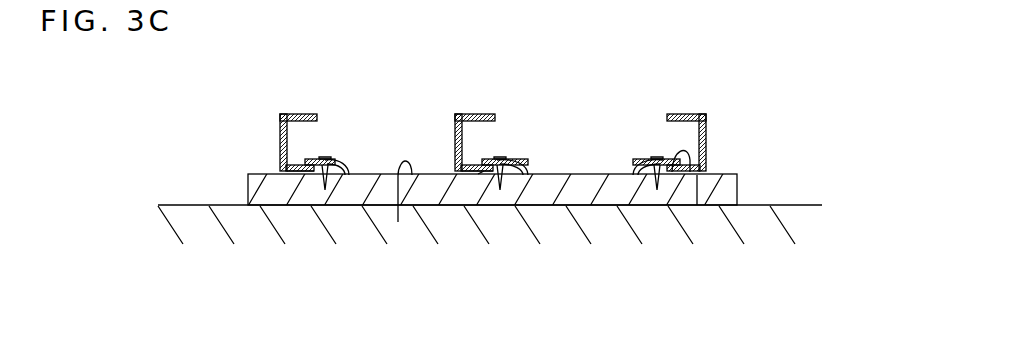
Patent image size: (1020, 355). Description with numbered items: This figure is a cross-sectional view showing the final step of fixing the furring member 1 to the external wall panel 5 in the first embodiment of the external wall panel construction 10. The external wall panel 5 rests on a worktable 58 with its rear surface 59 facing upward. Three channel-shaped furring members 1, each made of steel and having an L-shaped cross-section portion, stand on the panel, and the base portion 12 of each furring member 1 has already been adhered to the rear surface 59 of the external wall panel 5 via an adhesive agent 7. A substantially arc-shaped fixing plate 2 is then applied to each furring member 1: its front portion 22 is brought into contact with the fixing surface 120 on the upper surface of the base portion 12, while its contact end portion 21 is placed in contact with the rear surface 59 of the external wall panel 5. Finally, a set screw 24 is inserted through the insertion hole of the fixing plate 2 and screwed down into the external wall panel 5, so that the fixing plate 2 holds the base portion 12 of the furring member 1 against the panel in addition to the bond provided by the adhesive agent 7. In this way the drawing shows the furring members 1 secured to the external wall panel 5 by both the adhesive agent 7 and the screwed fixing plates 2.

The furring member 1 is at (295, 114).
The fixing plate 2 is at (327, 186).
The external wall panel 5 is at (629, 188).
The adhesive agent 7 is at (479, 175).
The external wall panel construction 10 is at (738, 128).
The base portion 12 is at (296, 165).
The contact end portion 21 is at (343, 158).
The front portion 22 is at (308, 158).
The set screw 24 is at (506, 157).
The worktable 58 is at (798, 220).
The rear surface 59 is at (397, 222).
The fixing surface 120 is at (697, 176).